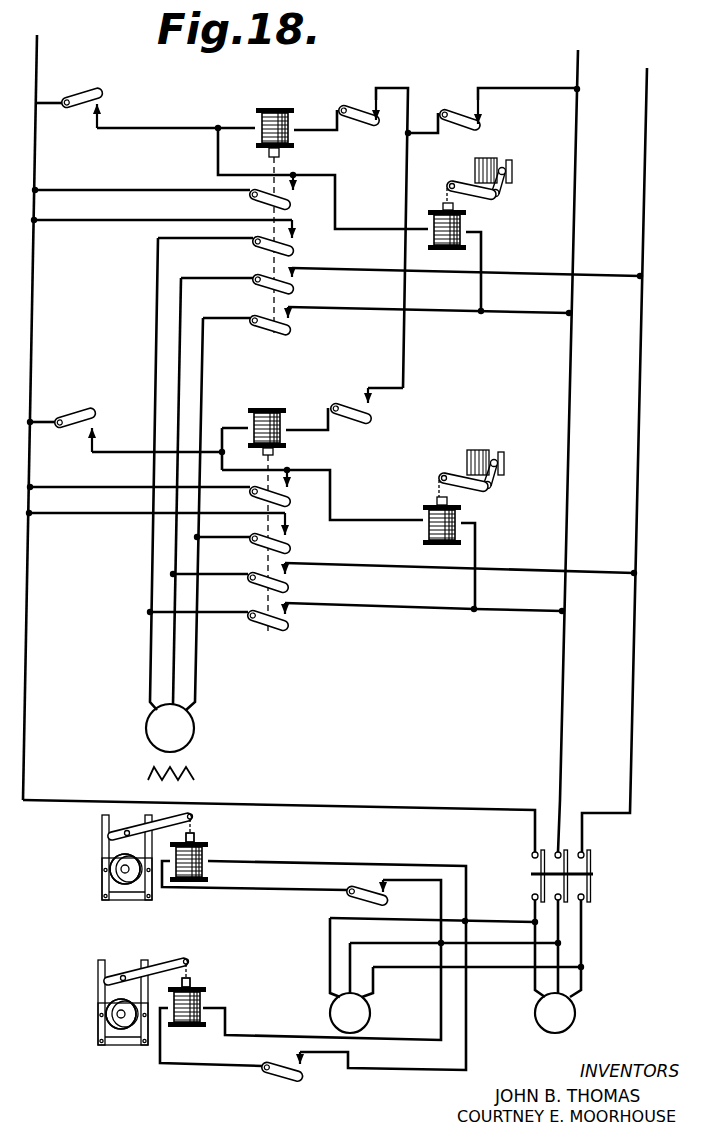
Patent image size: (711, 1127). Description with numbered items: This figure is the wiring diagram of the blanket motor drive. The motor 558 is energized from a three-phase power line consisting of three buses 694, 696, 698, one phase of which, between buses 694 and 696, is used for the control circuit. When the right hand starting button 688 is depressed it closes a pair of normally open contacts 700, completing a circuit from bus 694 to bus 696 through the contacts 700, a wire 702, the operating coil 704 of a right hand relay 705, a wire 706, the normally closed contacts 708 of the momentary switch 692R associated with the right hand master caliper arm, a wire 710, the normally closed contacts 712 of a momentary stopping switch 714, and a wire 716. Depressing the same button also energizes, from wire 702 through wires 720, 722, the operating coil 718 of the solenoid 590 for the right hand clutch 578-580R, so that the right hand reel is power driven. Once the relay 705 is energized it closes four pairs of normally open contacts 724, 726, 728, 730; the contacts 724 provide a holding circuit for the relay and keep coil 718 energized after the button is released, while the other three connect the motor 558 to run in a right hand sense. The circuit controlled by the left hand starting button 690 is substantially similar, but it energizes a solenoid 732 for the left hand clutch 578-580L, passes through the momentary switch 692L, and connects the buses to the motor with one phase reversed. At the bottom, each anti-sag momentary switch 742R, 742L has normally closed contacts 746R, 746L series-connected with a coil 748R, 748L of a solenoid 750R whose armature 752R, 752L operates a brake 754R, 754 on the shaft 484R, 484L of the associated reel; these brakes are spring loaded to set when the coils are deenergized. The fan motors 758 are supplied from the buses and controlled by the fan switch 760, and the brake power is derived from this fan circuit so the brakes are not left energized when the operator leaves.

The bus 694 is at (40, 58).
The bus 696 is at (578, 50).
The bus 698 is at (647, 68).
The right hand starting button 688 is at (108, 84).
The normally open contacts 700 is at (90, 105).
The wire 702 is at (149, 128).
The operating coil 704 is at (256, 116).
The right hand relay 705 is at (286, 103).
The wire 706 is at (324, 132).
The momentary switch 692R is at (357, 102).
The normally closed contacts 708 is at (356, 128).
The wire 710 is at (401, 88).
The momentary stopping switch 714 is at (456, 104).
The wire 716 is at (518, 88).
The normally closed contacts 712 is at (478, 132).
The right hand clutch 578-580R is at (500, 155).
The operating coil 718 is at (468, 226).
The wire 720 is at (370, 228).
The wire 722 is at (483, 263).
The solenoid 590 is at (448, 254).
The normally open contacts 724 is at (296, 196).
The normally open contacts 726 is at (268, 237).
The normally open contacts 728 is at (270, 277).
The normally open contacts 730 is at (268, 315).
The left hand starting button 690 is at (83, 407).
The momentary switch 692L is at (351, 400).
The left hand clutch 578-580L is at (489, 450).
The solenoid 732 is at (426, 532).
The motor 558 is at (190, 730).
The brake 754R is at (112, 875).
The shaft 484R is at (115, 868).
The armature 752R is at (193, 835).
The coil 748R is at (208, 862).
The solenoid 750R is at (177, 895).
The momentary switch 742R is at (344, 893).
The normally closed contacts 746R is at (370, 888).
The brake 754 is at (96, 1012).
The shaft 484L is at (123, 1028).
The armature 752L is at (190, 980).
The coil 748L is at (204, 1007).
The normally closed contacts 746L is at (277, 1077).
The momentary switch 742L is at (286, 1060).
The fan switch 760 is at (589, 903).
The motors 758 is at (362, 1009).